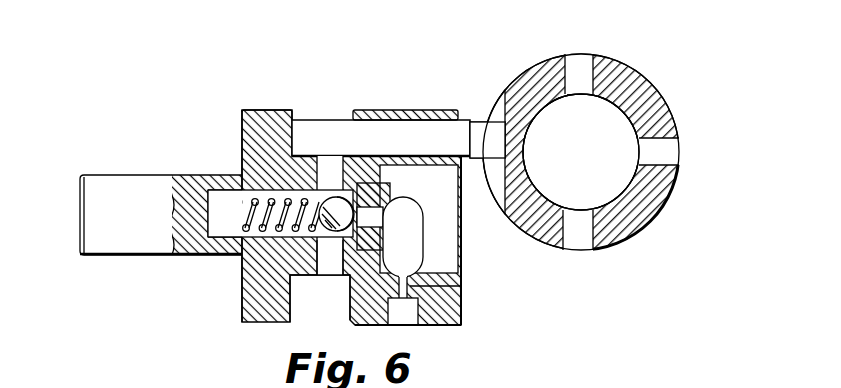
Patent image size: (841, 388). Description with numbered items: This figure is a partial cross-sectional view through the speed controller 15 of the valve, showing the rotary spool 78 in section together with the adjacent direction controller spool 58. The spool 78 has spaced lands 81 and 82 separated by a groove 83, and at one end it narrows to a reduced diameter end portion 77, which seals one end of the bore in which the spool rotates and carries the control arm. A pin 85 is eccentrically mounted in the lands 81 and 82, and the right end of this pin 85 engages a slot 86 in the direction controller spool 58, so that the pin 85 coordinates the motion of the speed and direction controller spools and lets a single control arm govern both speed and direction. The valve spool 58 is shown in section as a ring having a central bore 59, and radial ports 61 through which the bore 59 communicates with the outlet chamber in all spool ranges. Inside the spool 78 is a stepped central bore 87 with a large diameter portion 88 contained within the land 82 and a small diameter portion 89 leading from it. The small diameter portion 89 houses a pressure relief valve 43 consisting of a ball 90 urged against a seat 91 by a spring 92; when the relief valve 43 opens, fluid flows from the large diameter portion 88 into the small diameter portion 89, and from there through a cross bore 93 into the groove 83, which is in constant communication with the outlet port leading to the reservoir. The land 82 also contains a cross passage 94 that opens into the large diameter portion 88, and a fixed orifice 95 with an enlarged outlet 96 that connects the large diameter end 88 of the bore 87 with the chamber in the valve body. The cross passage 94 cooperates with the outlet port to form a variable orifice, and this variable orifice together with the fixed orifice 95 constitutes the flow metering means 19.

The speed controller 15 is at (184, 301).
The flow metering means 19 is at (478, 332).
The pressure relief valve 43 is at (323, 174).
The valve spool 58 is at (666, 89).
The central bore 59 is at (581, 152).
The radial ports 61 is at (577, 85).
The reduced diameter end portion 77 is at (92, 218).
The spool 78 is at (205, 115).
The land 81 is at (270, 109).
The land 82 is at (412, 110).
The groove 83 is at (314, 303).
The pin 85 is at (398, 139).
The slot 86 is at (496, 183).
The stepped central bore 87 is at (452, 251).
The large diameter portion 88 is at (422, 219).
The small diameter portion 89 is at (238, 257).
The ball 90 is at (331, 199).
The seat 91 is at (395, 201).
The spring 92 is at (238, 183).
The cross bore 93 is at (331, 271).
The cross passage 94 is at (417, 240).
The fixed orifice 95 is at (461, 286).
The enlarged outlet 96 is at (410, 310).